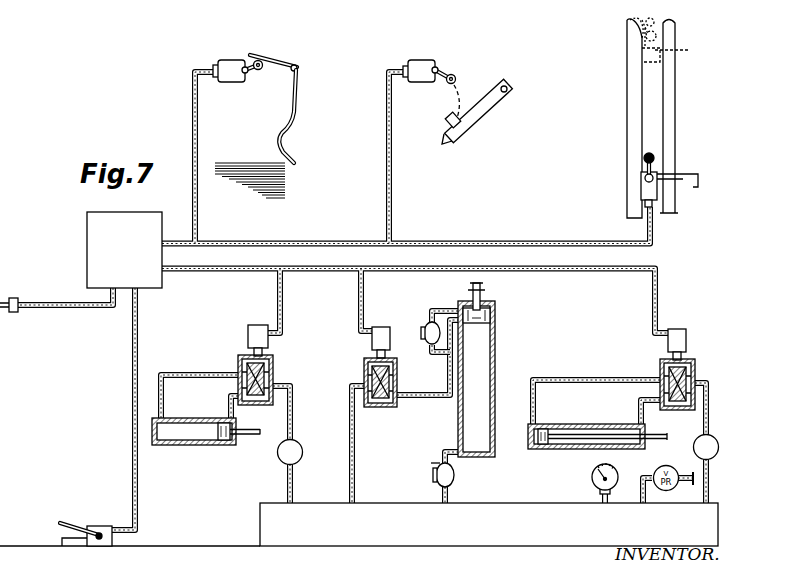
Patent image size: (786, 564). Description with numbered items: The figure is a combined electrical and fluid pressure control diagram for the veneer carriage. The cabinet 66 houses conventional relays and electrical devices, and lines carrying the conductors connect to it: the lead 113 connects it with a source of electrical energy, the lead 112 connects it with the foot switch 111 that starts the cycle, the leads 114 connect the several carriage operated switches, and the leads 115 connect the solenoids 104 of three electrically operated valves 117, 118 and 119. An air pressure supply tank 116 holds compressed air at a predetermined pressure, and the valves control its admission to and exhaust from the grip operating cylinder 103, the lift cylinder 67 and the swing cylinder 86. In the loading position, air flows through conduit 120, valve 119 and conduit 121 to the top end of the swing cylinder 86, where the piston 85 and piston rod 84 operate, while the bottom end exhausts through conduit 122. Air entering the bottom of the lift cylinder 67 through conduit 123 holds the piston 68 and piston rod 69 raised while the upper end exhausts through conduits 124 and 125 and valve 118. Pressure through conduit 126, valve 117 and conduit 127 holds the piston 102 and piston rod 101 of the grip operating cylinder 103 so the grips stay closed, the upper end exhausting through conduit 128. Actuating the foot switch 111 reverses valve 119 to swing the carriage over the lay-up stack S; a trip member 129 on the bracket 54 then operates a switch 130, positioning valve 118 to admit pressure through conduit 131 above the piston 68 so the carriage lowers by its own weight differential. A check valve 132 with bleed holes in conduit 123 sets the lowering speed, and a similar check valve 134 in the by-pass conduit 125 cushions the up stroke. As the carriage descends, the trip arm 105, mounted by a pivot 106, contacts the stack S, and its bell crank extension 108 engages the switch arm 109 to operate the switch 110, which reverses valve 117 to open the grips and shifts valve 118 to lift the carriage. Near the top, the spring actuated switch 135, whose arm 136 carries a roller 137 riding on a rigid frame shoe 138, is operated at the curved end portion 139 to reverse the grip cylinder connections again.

The bracket 54 is at (478, 110).
The cabinet 66 is at (137, 257).
The lift cylinder 67 is at (495, 365).
The piston 68 is at (495, 316).
The piston rod 69 is at (485, 290).
The piston rod 84 is at (663, 443).
The piston 85 is at (540, 449).
The swing cylinder 86 is at (570, 449).
The piston rod 101 is at (250, 441).
The piston 102 is at (218, 446).
The grip operating cylinder 103 is at (172, 446).
The solenoid 104 is at (677, 329).
The trip arm 105 is at (278, 142).
The pivot 106 is at (299, 67).
The bell crank extension 108 is at (276, 63).
The switch arm 109 is at (250, 80).
The switch 110 is at (232, 82).
The foot switch 111 is at (100, 526).
The line 112 is at (132, 355).
The lead 113 is at (63, 303).
The leads 114 is at (200, 220).
The leads 115 is at (359, 300).
The air pressure supply tank 116 is at (546, 537).
The valve 117 is at (274, 360).
The valve 118 is at (396, 363).
The valve 119 is at (692, 363).
The conduit 120 is at (708, 428).
The conduit 121 is at (640, 410).
The conduit 122 is at (610, 384).
The conduit 123 is at (421, 467).
The conduit 124 is at (412, 399).
The by-pass conduit 125 is at (445, 307).
The conduit 126 is at (289, 431).
The conduit 127 is at (170, 377).
The conduit 128 is at (228, 407).
The trip member 129 is at (450, 123).
The switch 130 is at (421, 83).
The conduit 131 is at (356, 441).
The check valve 132 is at (453, 478).
The check valve 134 is at (428, 324).
The spring actuated switch 135 is at (660, 195).
The arm 136 is at (655, 172).
The roller 137 is at (654, 160).
The frame shoe 138 is at (633, 112).
The curved end portion 139 is at (636, 22).
The lay-up stack S is at (233, 168).